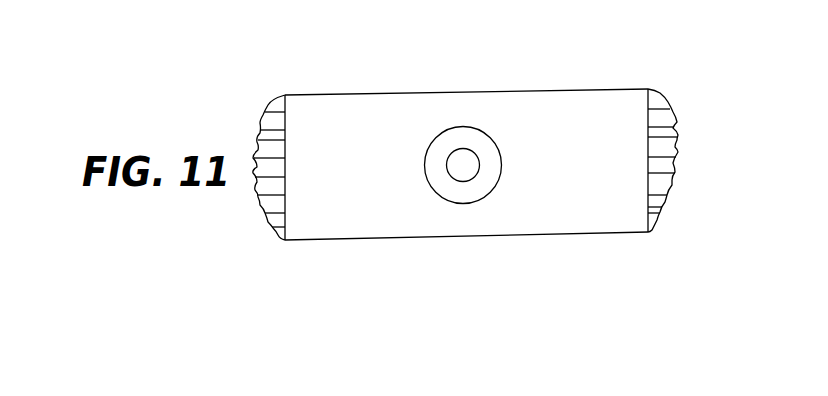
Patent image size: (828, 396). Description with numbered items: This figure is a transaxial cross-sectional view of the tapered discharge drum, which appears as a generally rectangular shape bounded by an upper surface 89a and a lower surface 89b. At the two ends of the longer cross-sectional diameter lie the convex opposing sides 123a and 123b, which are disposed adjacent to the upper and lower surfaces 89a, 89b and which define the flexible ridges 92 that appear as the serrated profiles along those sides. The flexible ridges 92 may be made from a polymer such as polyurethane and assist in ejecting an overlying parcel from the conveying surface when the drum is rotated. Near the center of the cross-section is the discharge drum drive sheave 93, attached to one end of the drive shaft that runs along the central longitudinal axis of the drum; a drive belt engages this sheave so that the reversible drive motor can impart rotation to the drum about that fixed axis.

The flexible ridges 92 is at (678, 137).
The discharge drum drive sheave 93 is at (498, 141).
The upper surface 89a is at (340, 94).
The lower surface 89b is at (372, 242).
The convex opposing side 123a is at (265, 130).
The convex opposing side 123b is at (665, 119).